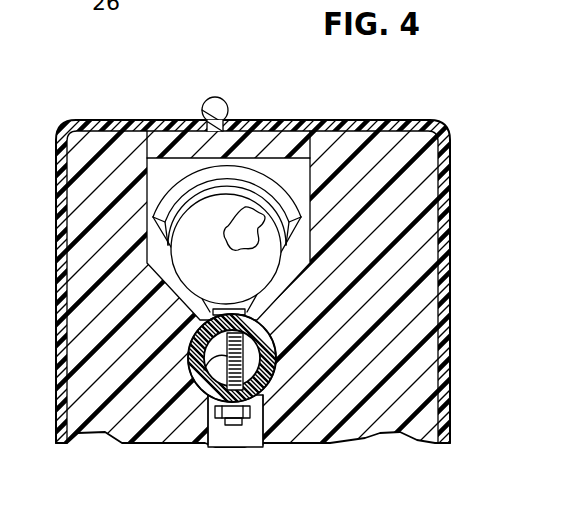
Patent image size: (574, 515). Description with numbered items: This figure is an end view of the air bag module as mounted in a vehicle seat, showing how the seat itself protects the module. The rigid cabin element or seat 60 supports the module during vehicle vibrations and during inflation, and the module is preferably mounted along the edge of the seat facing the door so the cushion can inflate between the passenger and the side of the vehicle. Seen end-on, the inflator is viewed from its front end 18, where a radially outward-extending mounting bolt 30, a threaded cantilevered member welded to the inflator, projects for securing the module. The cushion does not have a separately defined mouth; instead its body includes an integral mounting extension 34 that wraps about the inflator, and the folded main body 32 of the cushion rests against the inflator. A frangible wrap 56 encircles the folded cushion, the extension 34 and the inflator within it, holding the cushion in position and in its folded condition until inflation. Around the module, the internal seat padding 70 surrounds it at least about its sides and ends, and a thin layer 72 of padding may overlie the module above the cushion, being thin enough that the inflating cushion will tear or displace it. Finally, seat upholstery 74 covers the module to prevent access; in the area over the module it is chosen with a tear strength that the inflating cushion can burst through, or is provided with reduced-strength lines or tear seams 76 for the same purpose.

The front end 18 is at (230, 230).
The mounting bolt 30 is at (193, 377).
The main body 32 is at (282, 198).
The mounting extension 34 is at (242, 282).
The frangible wrap 56 is at (312, 207).
The seat 60 is at (273, 330).
The internal seat padding 70 is at (82, 340).
The thin layer of padding 72 is at (263, 145).
The seat upholstery 74 is at (452, 186).
The tear seams 76 is at (204, 106).